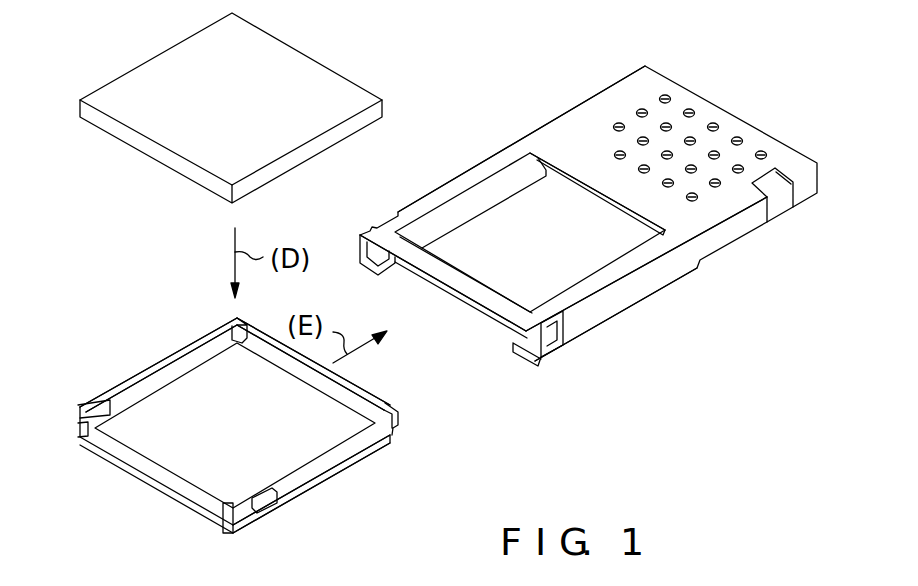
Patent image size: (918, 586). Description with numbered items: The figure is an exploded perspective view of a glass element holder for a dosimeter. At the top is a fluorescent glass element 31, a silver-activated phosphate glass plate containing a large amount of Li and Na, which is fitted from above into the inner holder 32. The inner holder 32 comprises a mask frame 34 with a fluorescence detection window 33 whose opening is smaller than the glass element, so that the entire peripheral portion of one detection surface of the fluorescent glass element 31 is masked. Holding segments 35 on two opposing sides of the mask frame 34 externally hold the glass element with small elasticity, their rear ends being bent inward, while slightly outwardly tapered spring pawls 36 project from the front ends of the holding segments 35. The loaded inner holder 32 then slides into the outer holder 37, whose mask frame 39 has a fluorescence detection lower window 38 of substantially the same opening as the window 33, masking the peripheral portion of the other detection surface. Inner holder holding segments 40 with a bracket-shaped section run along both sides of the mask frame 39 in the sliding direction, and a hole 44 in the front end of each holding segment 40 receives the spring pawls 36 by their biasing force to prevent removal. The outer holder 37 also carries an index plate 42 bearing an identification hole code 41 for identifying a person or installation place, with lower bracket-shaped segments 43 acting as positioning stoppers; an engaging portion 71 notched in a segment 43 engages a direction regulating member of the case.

The fluorescent glass element 31 is at (313, 78).
The inner holder 32 is at (352, 480).
The fluorescence detection window 33 is at (215, 455).
The mask frame 34 is at (352, 408).
The holding segments 35 is at (312, 475).
The spring pawls 36 is at (90, 400).
The outer holder 37 is at (713, 280).
The fluorescence detection lower window 38 is at (600, 247).
The mask frame 39 is at (487, 167).
The inner holder holding segments 40 is at (627, 295).
The identification hole code 41 is at (695, 112).
The index plate 42 is at (752, 130).
The ']'-shaped segments 43 is at (733, 228).
The hole 44 is at (378, 221).
The engaging portion 71 is at (778, 192).